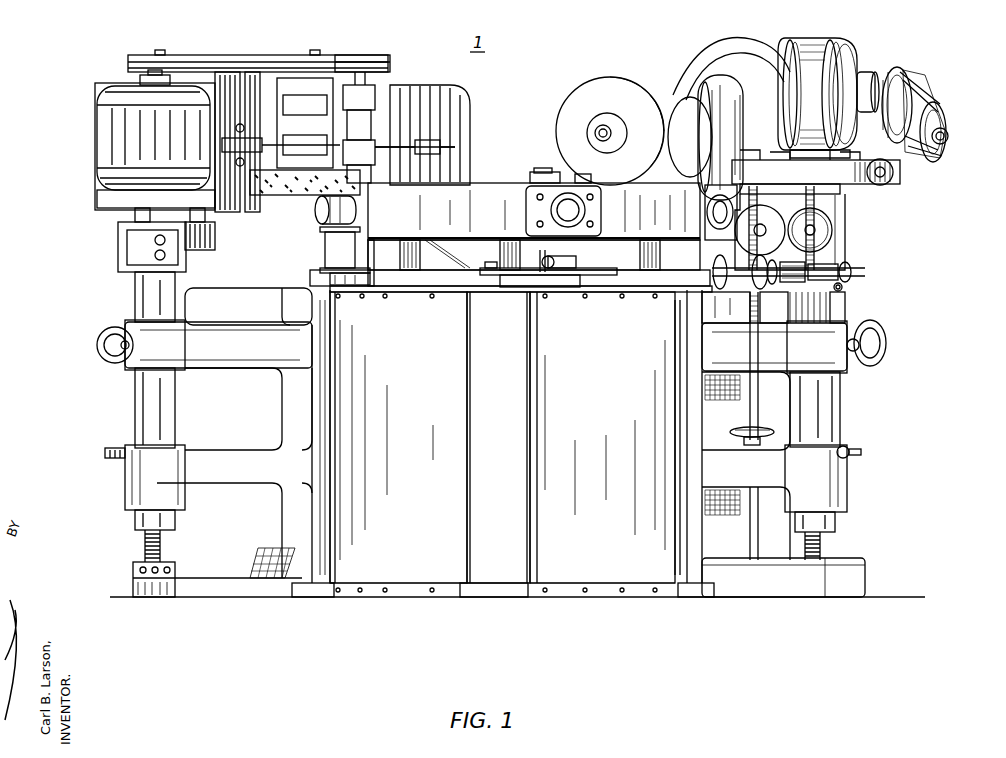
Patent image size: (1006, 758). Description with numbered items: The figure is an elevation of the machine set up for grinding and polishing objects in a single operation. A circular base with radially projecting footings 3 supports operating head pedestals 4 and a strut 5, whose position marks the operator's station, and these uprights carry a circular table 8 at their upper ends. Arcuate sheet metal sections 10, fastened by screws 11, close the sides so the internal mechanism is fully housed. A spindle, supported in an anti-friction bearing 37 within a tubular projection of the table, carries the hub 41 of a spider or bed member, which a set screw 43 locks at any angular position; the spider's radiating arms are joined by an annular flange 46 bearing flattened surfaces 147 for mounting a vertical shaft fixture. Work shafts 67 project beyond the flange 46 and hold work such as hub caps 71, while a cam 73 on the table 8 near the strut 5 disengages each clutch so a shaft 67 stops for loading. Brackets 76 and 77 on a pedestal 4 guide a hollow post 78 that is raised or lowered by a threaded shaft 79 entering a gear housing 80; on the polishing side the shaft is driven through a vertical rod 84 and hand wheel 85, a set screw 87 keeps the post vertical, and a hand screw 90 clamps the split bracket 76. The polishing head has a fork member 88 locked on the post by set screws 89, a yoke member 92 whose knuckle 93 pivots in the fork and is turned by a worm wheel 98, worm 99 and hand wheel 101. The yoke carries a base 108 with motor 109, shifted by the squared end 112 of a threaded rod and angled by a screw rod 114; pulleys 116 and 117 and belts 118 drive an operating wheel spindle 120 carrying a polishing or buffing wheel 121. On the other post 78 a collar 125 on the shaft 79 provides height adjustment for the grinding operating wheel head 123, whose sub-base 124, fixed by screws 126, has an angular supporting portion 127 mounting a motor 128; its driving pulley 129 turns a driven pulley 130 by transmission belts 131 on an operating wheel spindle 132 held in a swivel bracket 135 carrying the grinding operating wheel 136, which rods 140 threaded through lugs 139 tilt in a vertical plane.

The footings 3 is at (312, 597).
The operating head pedestals 4 is at (282, 397).
The strut 5 is at (466, 585).
The table 8 is at (640, 288).
The arcuate sheet metal sections 10 is at (412, 590).
The screws 11 is at (378, 592).
The anti-friction bearing 37 is at (110, 448).
The hub 41 is at (560, 250).
The set screw 43 is at (580, 258).
The annular flange 46 is at (472, 188).
The work shafts 67 is at (350, 238).
The hub caps 71 is at (566, 195).
The cam 73 is at (504, 268).
The bracket 76 is at (206, 328).
The bracket 77 is at (125, 482).
The posts 78 is at (135, 294).
The threaded shaft 79 is at (162, 542).
The gear housing 80 is at (865, 572).
The vertical rod 84 is at (760, 541).
The hand wheel 85 is at (740, 432).
The set screw 87 is at (852, 450).
The fork member 88 is at (850, 272).
The set screws 89 is at (843, 288).
The hand screw 90 is at (885, 335).
The yoke member 92 is at (850, 200).
The knuckle 93 is at (830, 222).
The worm wheel 98 is at (830, 238).
The worm 99 is at (835, 255).
The hand wheel 101 is at (770, 290).
The base 108 is at (900, 170).
The motor 109 is at (718, 52).
The squared end 112 is at (890, 182).
The screw rod 114 is at (832, 230).
The pulley 116 is at (920, 70).
The pulley 117 is at (945, 124).
The driving belts 118 is at (930, 100).
The operating wheel spindle 120 is at (596, 133).
The polishing or buffing wheel 121 is at (596, 92).
The grinding operating wheel head 123 is at (60, 144).
The sub-base 124 is at (118, 260).
The collar 125 is at (133, 570).
The screws 126 is at (165, 256).
The angular supporting portion 127 is at (462, 108).
The motor 128 is at (97, 173).
The driving pulley 129 is at (135, 56).
The driven pulley 130 is at (330, 55).
The transmission belts 131 is at (228, 60).
The operating wheel spindle 132 is at (305, 52).
The swivel bracket 135 is at (272, 88).
The operating wheel 136 is at (255, 200).
The lugs 139 is at (440, 138).
The rods 140 is at (232, 175).
The flattened surfaces 147 is at (532, 186).